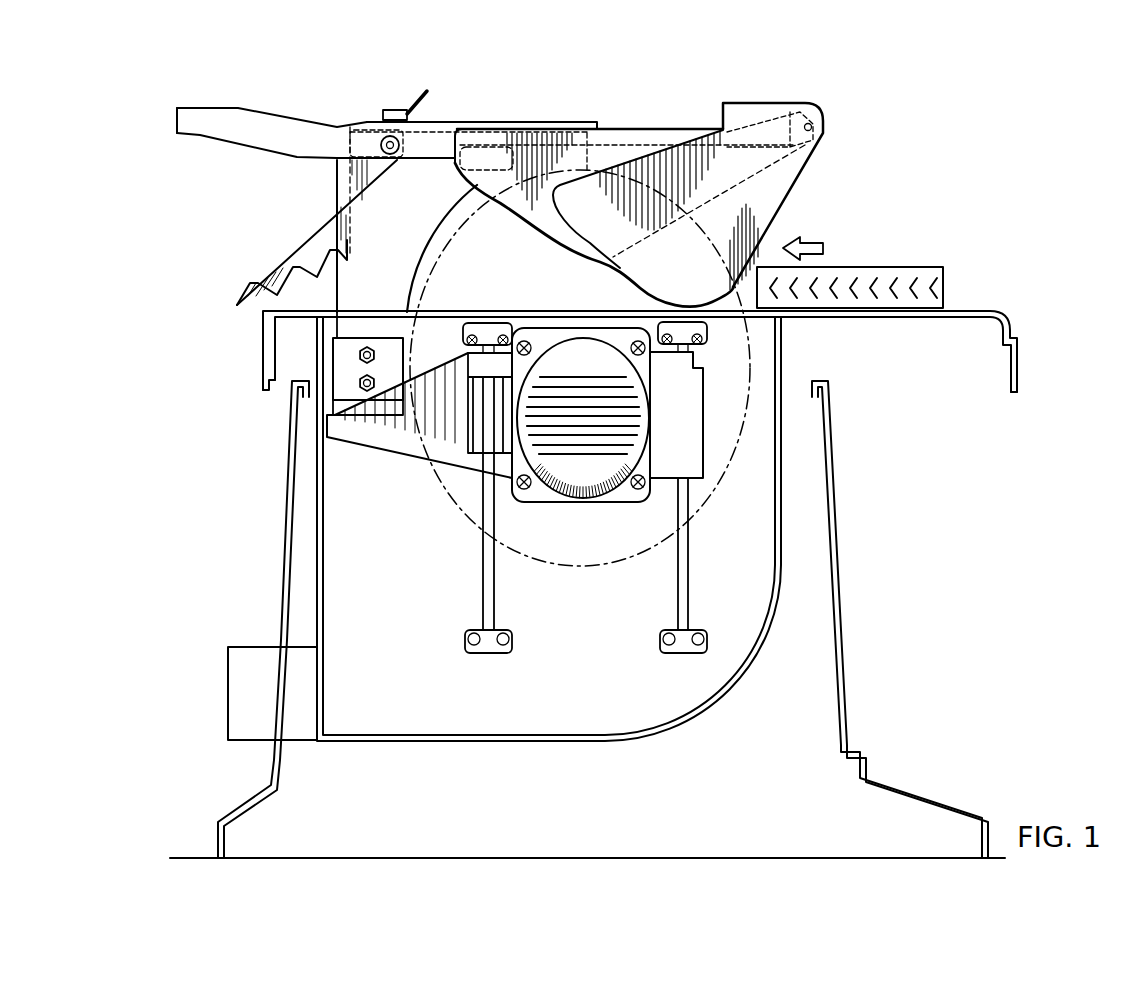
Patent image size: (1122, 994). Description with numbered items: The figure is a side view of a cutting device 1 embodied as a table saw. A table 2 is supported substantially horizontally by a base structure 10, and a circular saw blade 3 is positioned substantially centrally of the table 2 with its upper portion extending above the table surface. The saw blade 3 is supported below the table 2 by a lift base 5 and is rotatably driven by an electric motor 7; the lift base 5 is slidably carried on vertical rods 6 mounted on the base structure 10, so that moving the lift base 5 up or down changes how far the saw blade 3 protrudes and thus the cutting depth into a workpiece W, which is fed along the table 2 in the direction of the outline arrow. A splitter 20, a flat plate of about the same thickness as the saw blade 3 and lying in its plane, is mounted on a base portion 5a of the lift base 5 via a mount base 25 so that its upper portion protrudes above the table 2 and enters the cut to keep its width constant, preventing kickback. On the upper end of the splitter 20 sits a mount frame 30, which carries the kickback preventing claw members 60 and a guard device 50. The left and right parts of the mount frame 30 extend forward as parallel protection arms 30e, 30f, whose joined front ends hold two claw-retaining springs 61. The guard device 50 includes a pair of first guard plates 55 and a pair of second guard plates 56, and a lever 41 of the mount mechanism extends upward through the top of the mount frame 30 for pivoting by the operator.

The cutting device 1 is at (880, 176).
The table 2 is at (972, 311).
The circular saw blade 3 is at (750, 343).
The lift base 5 is at (503, 472).
The base portion 5a is at (380, 440).
The vertical rods 6 is at (483, 583).
The electric motor 7 is at (588, 457).
The base structure 10 is at (833, 543).
The splitter 20 is at (392, 233).
The mount base 25 is at (350, 369).
The mount frame 30 is at (444, 112).
The protection arm 30e is at (272, 91).
The protection arm 30f is at (272, 127).
The lever 41 is at (398, 110).
The guard device 50 is at (697, 115).
The first guard plates 55 is at (633, 127).
The second guard plates 56 is at (780, 207).
The kickback preventing claw members 60 is at (283, 262).
The claw-retaining springs 61 is at (180, 100).
The workpiece W is at (920, 267).